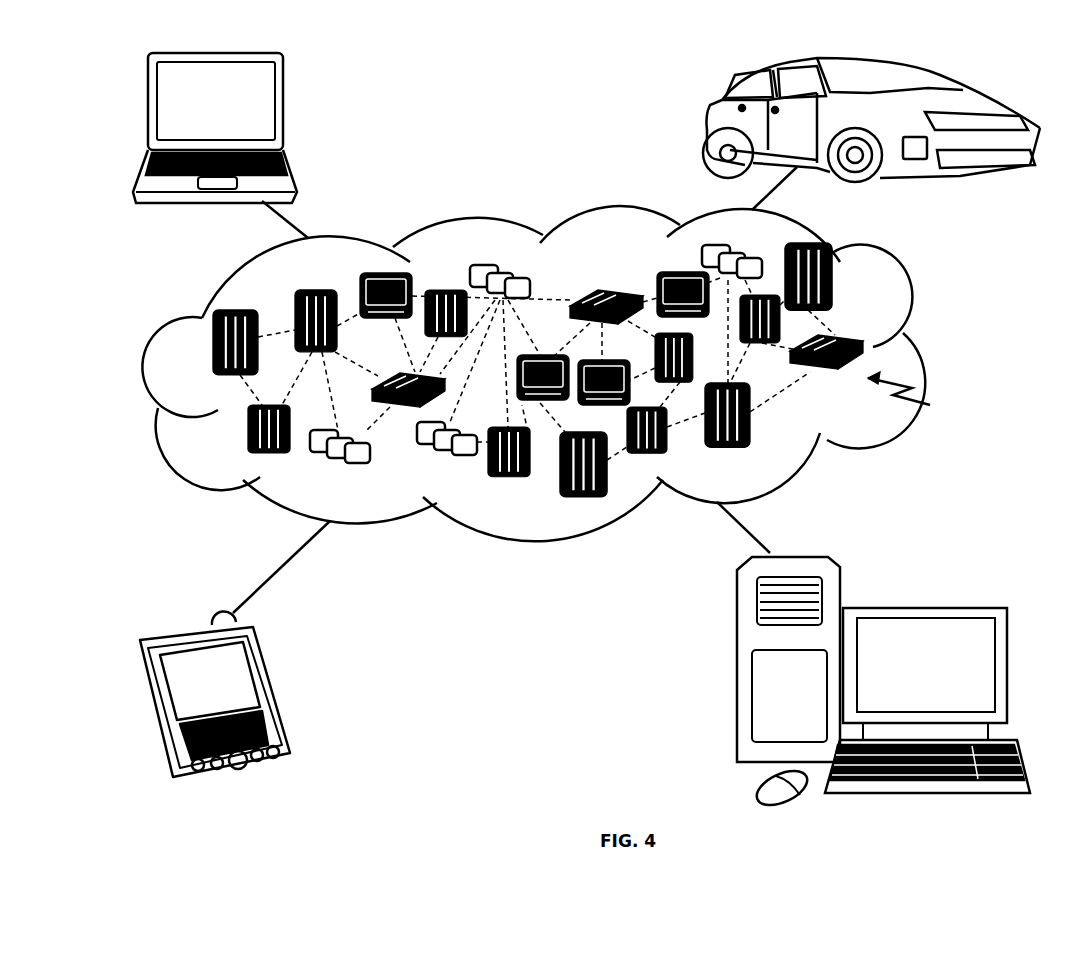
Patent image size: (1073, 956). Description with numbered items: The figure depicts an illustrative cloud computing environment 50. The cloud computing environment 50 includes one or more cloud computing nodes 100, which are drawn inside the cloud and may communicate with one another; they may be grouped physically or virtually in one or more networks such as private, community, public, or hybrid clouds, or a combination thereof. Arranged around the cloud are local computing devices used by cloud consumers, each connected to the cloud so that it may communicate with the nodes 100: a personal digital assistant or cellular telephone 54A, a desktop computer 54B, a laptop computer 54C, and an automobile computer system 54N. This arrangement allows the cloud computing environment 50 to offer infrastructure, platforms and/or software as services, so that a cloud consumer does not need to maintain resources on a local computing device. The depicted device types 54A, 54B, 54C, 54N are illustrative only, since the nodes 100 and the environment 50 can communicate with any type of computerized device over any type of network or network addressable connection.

The cloud computing environment 50 is at (925, 351).
The cloud computing nodes 100 is at (926, 397).
The personal digital assistant or cellular telephone 54A is at (273, 690).
The desktop computer 54B is at (923, 608).
The laptop computer 54C is at (285, 108).
The automobile computer system 54N is at (712, 122).